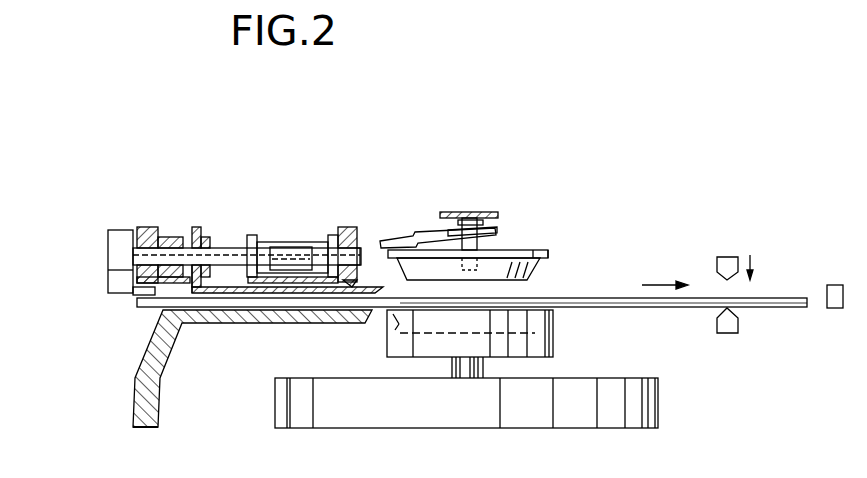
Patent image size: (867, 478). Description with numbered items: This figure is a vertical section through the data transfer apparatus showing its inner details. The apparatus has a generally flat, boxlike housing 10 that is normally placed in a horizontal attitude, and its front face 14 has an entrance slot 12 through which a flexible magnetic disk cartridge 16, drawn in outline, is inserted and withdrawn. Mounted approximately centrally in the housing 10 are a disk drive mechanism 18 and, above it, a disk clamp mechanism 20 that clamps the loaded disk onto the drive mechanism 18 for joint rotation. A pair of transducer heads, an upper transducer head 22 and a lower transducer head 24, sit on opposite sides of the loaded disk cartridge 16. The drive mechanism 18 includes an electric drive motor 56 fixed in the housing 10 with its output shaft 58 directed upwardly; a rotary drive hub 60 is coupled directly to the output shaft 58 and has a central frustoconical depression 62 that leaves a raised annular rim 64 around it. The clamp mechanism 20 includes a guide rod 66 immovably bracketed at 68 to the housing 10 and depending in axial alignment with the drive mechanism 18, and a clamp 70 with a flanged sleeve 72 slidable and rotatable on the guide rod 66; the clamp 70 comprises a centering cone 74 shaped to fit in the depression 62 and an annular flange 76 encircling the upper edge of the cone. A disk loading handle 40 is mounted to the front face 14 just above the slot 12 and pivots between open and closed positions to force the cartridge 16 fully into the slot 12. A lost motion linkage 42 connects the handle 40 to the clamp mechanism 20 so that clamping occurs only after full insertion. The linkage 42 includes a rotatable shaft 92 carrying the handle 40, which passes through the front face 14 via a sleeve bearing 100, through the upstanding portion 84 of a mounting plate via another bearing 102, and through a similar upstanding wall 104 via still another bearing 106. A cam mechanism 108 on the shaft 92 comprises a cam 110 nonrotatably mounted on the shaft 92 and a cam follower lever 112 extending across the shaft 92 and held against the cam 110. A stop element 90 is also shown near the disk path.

The housing 10 is at (126, 419).
The entrance opening or slot 12 is at (157, 312).
The front face 14 is at (132, 383).
The flexible magnetic disk cartridge 16 is at (684, 308).
The disk drive mechanism 18 is at (485, 424).
The disk clamp mechanism 20 is at (491, 221).
The upper transducer head 22 is at (737, 256).
The lower transducer head 24 is at (738, 333).
The disk loading handle 40 is at (110, 247).
The lost motion linkage 42 is at (265, 217).
The electric drive motor 56 is at (680, 402).
The output shaft 58 is at (464, 372).
The rotary drive hub 60 is at (476, 344).
The frustoconical depression or socket 62 is at (405, 315).
The annular rim 64 is at (555, 312).
The guide rod or pin 66 is at (454, 238).
The bracket 68 is at (468, 212).
The clamp 70 is at (543, 250).
The flanged sleeve 72 is at (497, 240).
The centering cone 74 is at (533, 268).
The annular flange or shoulder 76 is at (540, 263).
The upstanding portion 84 is at (196, 232).
The stop 90 is at (835, 285).
The rotatable shaft 92 is at (185, 250).
The sleeve bearing 100 is at (165, 228).
The bearing 102 is at (212, 243).
The upstanding wall 104 is at (347, 228).
The bearing 106 is at (363, 246).
The cam mechanism 108 is at (296, 236).
The cam 110 is at (302, 259).
The cam follower lever 112 is at (268, 283).